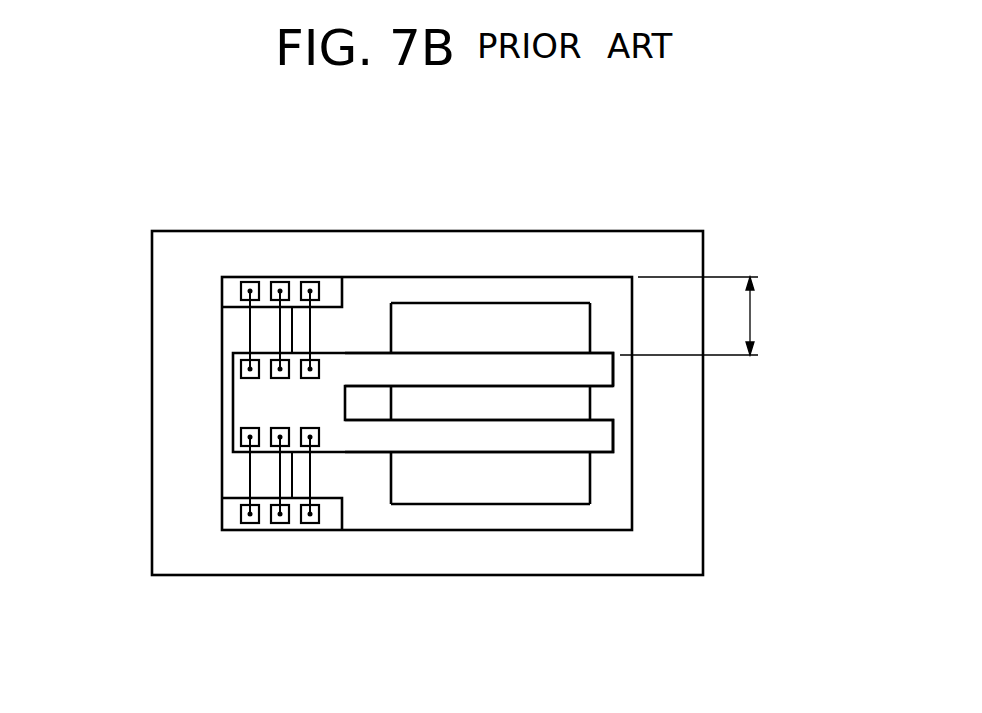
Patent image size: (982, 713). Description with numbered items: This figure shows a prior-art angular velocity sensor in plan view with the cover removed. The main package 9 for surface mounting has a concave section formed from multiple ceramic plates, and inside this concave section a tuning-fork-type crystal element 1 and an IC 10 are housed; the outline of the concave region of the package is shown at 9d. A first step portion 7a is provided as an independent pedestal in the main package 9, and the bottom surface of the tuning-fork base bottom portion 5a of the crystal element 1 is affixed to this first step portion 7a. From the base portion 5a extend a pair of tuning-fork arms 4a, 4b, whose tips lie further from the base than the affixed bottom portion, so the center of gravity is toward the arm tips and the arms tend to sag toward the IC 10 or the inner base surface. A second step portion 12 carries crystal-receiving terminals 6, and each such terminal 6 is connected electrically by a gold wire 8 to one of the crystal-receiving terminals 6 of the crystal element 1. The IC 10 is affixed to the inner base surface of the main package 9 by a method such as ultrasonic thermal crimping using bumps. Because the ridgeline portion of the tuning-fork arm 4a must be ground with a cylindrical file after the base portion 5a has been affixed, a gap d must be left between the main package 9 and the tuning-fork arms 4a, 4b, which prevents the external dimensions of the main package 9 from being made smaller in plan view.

The tuning-fork-type crystal element 1 is at (437, 469).
The tuning-fork arm 4a is at (602, 442).
The tuning-fork arm 4b is at (607, 372).
The tuning-fork base bottom portion 5a is at (253, 403).
The crystal-receiving terminal 6 is at (252, 283).
The first step portion 7a is at (240, 340).
The gold wire 8 is at (310, 330).
The main package 9 is at (648, 577).
The cavity of package 9d is at (607, 293).
The IC 10 is at (523, 485).
The second step portion 12 is at (327, 286).
The gap d is at (698, 316).